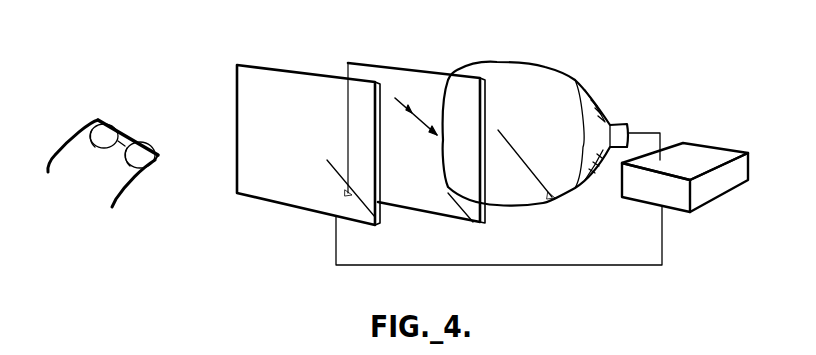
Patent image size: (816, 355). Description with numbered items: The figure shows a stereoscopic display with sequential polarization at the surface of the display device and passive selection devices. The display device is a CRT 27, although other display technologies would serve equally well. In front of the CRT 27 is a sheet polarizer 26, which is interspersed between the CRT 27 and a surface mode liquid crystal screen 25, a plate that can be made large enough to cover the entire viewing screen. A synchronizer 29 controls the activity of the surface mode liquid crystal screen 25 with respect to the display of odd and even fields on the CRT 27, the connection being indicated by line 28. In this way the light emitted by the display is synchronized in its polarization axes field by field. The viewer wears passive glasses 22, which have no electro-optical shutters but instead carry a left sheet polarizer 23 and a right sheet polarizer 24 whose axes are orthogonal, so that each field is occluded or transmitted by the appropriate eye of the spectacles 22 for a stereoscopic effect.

The glasses 22 is at (125, 130).
The left sheet polarizer 23 is at (100, 147).
The right sheet polarizer 24 is at (145, 153).
The surface mode liquid crystal screen 25 is at (290, 77).
The sheet polarizer 26 is at (400, 77).
The CRT 27 is at (540, 78).
The electrical connection line 28 is at (583, 265).
The synchronizer 29 is at (702, 153).